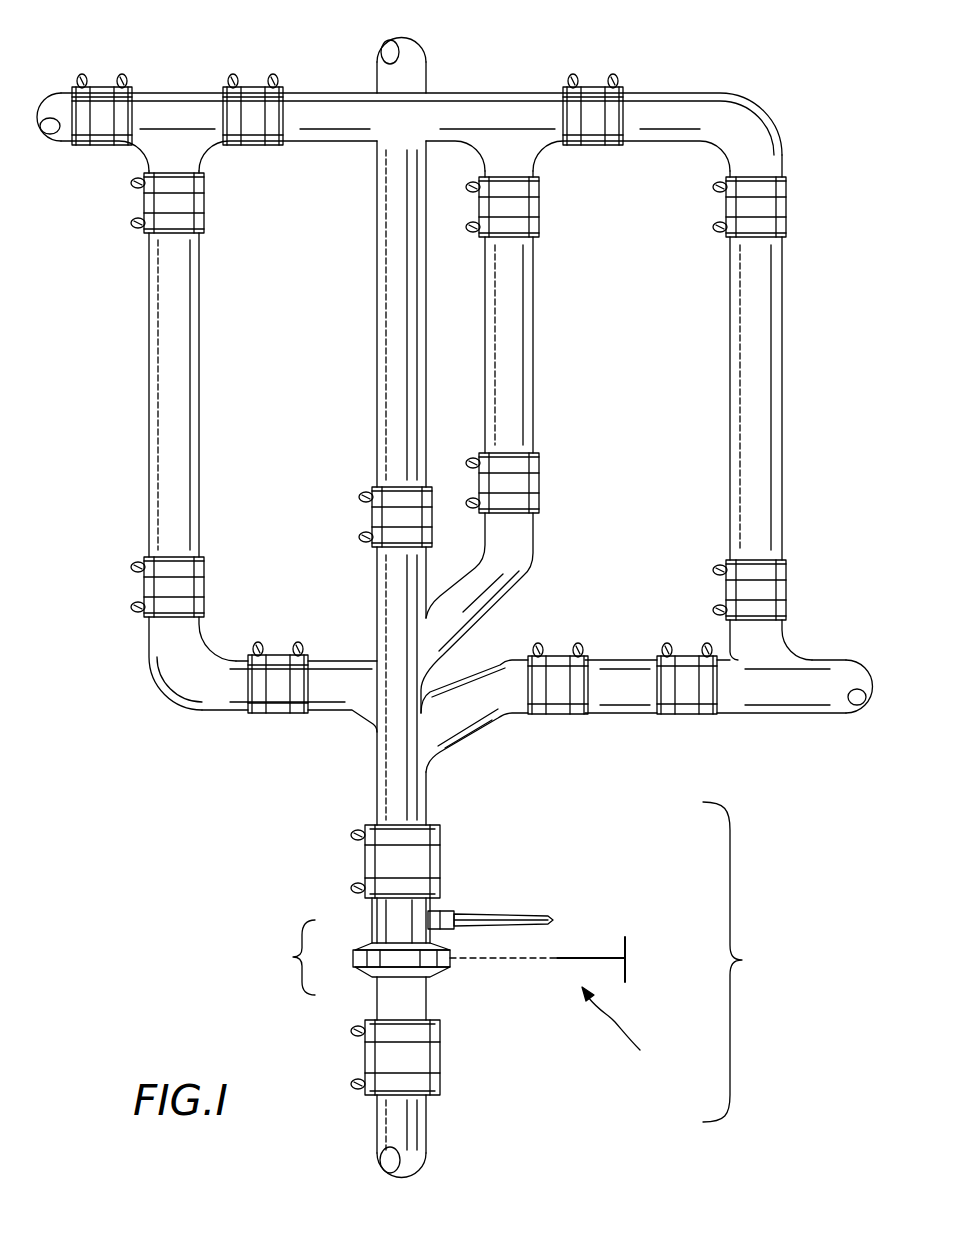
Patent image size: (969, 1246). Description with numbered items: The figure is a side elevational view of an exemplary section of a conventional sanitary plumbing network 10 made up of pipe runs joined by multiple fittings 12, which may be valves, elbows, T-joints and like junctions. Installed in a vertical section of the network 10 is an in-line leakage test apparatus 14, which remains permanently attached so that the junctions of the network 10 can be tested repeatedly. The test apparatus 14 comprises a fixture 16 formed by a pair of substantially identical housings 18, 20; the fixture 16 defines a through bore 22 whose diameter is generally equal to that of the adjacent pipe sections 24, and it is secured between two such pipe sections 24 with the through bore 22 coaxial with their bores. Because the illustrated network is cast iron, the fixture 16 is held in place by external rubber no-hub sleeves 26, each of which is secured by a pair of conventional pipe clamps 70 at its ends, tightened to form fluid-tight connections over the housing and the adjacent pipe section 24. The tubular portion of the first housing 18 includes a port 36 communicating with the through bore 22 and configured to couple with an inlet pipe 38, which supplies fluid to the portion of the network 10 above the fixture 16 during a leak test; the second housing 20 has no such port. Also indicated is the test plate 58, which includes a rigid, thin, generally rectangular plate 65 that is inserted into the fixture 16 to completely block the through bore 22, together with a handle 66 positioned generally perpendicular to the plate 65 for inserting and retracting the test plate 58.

The plumbing network 10 is at (220, 816).
The fittings 12 is at (168, 96).
The in-line leakage test apparatus 14 is at (742, 960).
The fixture 16 is at (293, 957).
The first housing 18 is at (382, 920).
The second housing 20 is at (385, 995).
The through bore 22 is at (398, 1006).
The pipe sections 24 is at (412, 1136).
The no-hub sleeve 26 is at (432, 862).
The port 36 is at (440, 912).
The inlet pipe 38 is at (520, 914).
The test plate 58 is at (619, 1034).
The plate 65 is at (557, 958).
The handle 66 is at (627, 952).
The pipe clamps 70 is at (384, 838).